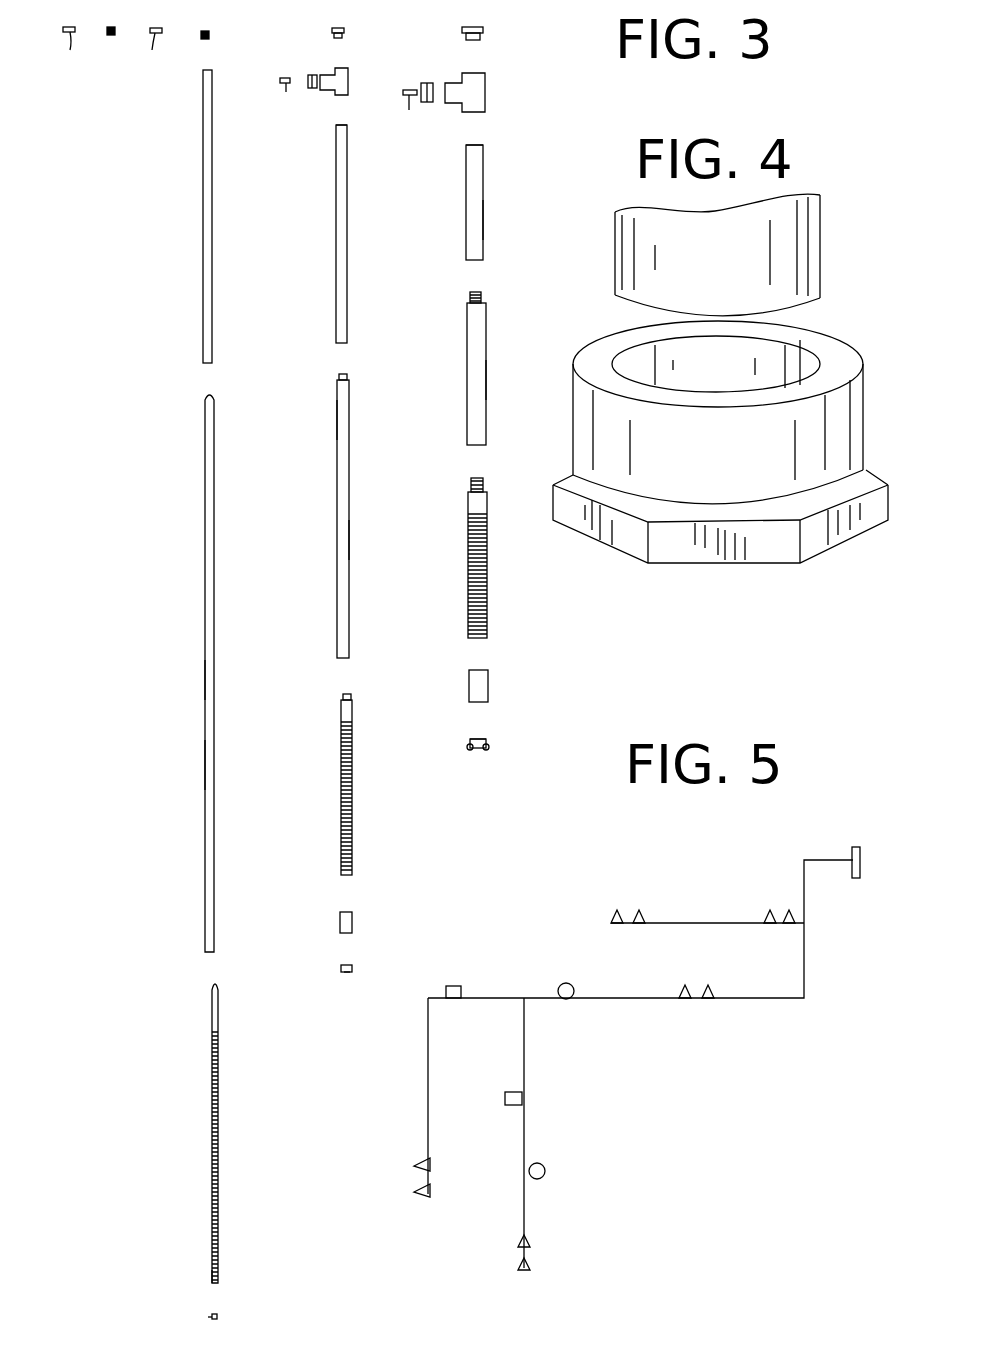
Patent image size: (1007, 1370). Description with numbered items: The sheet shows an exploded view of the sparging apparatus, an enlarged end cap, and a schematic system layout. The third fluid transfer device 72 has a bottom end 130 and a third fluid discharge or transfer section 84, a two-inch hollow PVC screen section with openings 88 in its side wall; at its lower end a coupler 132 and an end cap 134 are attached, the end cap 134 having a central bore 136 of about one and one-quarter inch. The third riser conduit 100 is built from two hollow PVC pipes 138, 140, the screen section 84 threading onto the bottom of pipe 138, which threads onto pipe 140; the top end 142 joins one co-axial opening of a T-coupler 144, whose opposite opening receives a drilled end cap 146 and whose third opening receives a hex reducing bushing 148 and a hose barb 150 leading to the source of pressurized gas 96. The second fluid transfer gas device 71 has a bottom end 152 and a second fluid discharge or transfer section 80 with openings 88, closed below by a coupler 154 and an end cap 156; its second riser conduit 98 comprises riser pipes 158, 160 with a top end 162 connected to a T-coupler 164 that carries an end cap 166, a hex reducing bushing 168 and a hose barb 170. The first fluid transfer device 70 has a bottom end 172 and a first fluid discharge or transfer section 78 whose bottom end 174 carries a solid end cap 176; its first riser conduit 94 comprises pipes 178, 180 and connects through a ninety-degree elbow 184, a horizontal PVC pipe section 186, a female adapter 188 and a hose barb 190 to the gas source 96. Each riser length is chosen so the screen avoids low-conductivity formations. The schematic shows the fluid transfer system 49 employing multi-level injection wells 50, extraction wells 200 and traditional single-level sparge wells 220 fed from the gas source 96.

In FIG. 5, the fluid transfer system 49 is at (686, 892).
In FIG. 5, the multi-level injection well 50 is at (455, 986).
In FIG. 3, the first fluid transfer device 70 is at (205, 494).
In FIG. 3, the second fluid transfer gas device 71 is at (337, 437).
In FIG. 3, the third fluid transfer device 72 is at (476, 222).
In FIG. 3, the first fluid discharge or transfer section 78 is at (212, 1165).
In FIG. 3, the second fluid discharge or transfer section 80 is at (340, 720).
In FIG. 3, the third fluid discharge or transfer section 84 is at (470, 603).
In FIG. 3, the openings 88 is at (341, 778).
In FIG. 3, the first riser conduit 94 is at (207, 677).
In FIG. 5, the source of pressurized gas 96 is at (853, 847).
In FIG. 3, the second riser conduit 98 is at (343, 540).
In FIG. 3, the third riser conduit 100 is at (470, 374).
In FIG. 3, the bottom end 130 is at (488, 752).
In FIG. 3, the coupler 132 is at (480, 685).
In FIG. 4, the coupler 132 is at (645, 246).
In FIG. 3, the end cap 134 is at (470, 740).
In FIG. 4, the end cap 134 is at (832, 365).
In FIG. 4, the central bore 136 is at (662, 355).
In FIG. 3, the hollow PVC pipe 138 is at (472, 337).
In FIG. 3, the hollow PVC pipe 140 is at (470, 190).
In FIG. 3, the top end 142 is at (474, 150).
In FIG. 3, the T-coupler 144 is at (478, 92).
In FIG. 3, the end cap 146 is at (485, 35).
In FIG. 3, the hex reducing bushing 148 is at (438, 70).
In FIG. 3, the hose barb 150 is at (398, 112).
In FIG. 3, the bottom end 152 is at (346, 973).
In FIG. 3, the coupler 154 is at (340, 922).
In FIG. 3, the end cap 156 is at (341, 967).
In FIG. 3, the hollow PVC riser pipe 158 is at (340, 485).
In FIG. 3, the hollow PVC riser pipe 160 is at (340, 262).
In FIG. 3, the top end 162 is at (340, 127).
In FIG. 3, the T-coupler 164 is at (350, 62).
In FIG. 3, the end cap 166 is at (342, 30).
In FIG. 3, the hex reducing bushing 168 is at (310, 78).
In FIG. 3, the hose barb 170 is at (275, 100).
In FIG. 3, the bottom end 172 is at (220, 1316).
In FIG. 3, the bottom end 174 is at (212, 1278).
In FIG. 3, the end cap 176 is at (208, 1317).
In FIG. 3, the hollow PVC pipe 178 is at (208, 764).
In FIG. 3, the hollow PVC pipe 180 is at (207, 281).
In FIG. 3, the 90° elbow 184 is at (208, 31).
In FIG. 3, the horizontal PVC pipe section 186 is at (160, 56).
In FIG. 3, the female adapter 188 is at (111, 36).
In FIG. 3, the hose barb 190 is at (58, 56).
In FIG. 5, the extraction well 200 is at (580, 962).
In FIG. 5, the single-level sparge well 220 is at (790, 912).